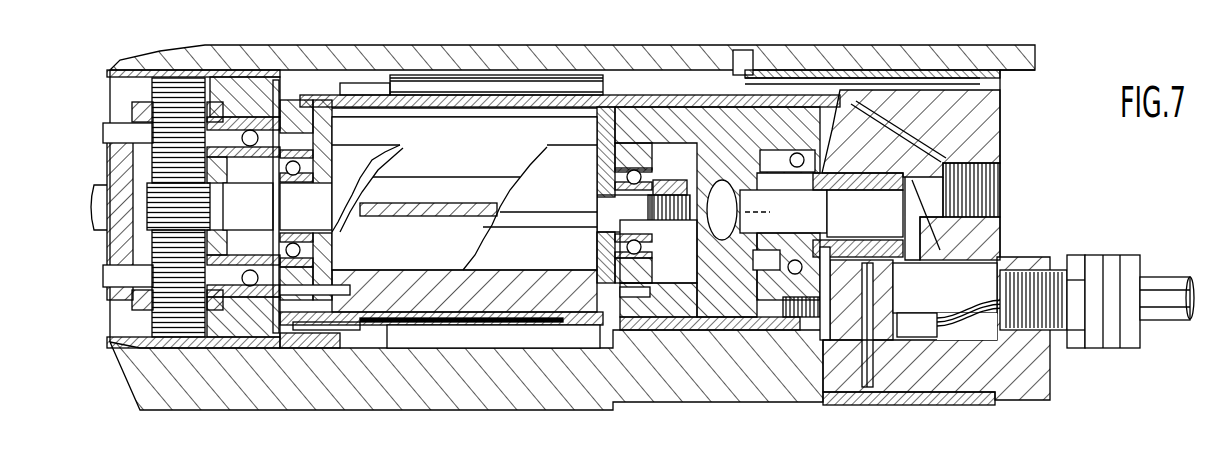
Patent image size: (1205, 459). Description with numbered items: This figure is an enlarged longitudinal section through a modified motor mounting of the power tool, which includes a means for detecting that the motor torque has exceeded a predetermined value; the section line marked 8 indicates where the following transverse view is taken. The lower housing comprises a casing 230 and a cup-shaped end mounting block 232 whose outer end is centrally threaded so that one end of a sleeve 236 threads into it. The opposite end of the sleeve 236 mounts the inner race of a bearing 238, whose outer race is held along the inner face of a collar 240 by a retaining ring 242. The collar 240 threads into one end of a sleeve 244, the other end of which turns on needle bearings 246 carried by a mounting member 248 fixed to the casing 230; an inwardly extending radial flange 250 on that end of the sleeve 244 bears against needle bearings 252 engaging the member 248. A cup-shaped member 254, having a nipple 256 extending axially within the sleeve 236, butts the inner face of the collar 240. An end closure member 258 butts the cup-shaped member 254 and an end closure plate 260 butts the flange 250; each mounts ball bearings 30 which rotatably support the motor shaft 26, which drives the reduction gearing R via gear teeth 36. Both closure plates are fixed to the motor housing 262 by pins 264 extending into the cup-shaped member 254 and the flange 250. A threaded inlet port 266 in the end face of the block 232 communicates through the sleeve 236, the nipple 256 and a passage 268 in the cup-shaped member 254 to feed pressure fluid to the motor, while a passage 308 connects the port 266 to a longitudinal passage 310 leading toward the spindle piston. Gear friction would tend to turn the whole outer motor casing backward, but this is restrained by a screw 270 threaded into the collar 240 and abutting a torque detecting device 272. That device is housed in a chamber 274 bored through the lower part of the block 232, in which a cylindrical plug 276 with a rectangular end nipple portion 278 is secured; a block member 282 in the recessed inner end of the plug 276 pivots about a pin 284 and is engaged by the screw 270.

The shaft 26 is at (259, 206).
The ball bearings 30 is at (297, 175).
The gear teeth 36 is at (150, 195).
The casing 230 is at (435, 405).
The cup-shaped end mounting block 232 is at (637, 395).
The sleeve 236 is at (840, 196).
The bearing 238 is at (790, 266).
The collar 240 is at (760, 130).
The retaining ring 242 is at (840, 95).
The sleeve 244 is at (427, 98).
The needle bearings 246 is at (330, 332).
The mounting member 248 is at (250, 340).
The radial flange 250 is at (279, 90).
The needle bearings 252 is at (290, 348).
The cup-shaped member 254 is at (675, 310).
The nipple 256 is at (770, 196).
The end closure member 258 is at (597, 256).
The end closure plate 260 is at (332, 137).
The motor housing 262 is at (422, 282).
The pins 264 is at (340, 290).
The threaded inlet port 266 is at (983, 207).
The passage 268 is at (597, 133).
The screw 270 is at (822, 338).
The torque detecting device 272 is at (1024, 409).
The chamber 274 is at (925, 263).
The cylindrical plug 276 is at (940, 390).
The rectangular end nipple portion 278 is at (1020, 368).
The block member 282 is at (853, 318).
The pin 284 is at (868, 390).
The passage 308 is at (940, 140).
The longitudinal passage 310 is at (1000, 95).
The section line 8- 8 is at (740, 317).
The reduction gearing R is at (98, 330).